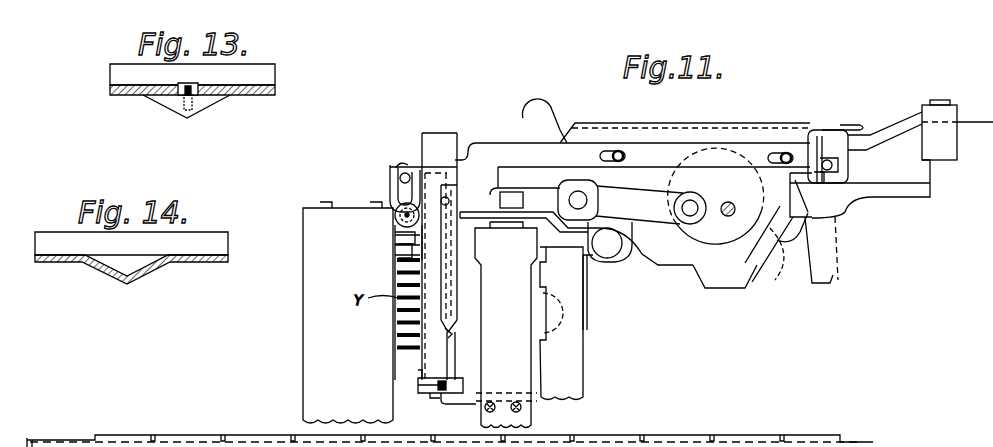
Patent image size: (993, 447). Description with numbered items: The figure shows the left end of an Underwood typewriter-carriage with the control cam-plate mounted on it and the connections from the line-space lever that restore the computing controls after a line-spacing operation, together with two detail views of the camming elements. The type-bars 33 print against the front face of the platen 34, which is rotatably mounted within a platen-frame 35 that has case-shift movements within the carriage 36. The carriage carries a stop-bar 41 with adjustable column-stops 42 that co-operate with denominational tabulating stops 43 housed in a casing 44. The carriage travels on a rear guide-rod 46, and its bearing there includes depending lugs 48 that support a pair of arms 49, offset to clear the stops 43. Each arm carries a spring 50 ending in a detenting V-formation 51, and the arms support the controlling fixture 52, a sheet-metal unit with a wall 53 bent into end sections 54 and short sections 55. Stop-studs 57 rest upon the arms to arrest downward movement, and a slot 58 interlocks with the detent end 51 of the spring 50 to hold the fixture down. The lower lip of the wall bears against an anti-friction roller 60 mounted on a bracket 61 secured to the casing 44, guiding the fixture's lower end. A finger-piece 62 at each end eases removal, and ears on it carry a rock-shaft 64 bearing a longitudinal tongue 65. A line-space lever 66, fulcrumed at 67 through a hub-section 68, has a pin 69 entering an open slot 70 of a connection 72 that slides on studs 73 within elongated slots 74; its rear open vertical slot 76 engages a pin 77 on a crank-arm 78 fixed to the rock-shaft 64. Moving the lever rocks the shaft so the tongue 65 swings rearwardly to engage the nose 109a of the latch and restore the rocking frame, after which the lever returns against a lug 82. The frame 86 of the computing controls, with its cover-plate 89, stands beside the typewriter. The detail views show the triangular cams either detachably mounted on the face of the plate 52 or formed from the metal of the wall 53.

In FIG. 11, the type-bar 33 is at (838, 240).
In FIG. 11, the platen 34 is at (772, 250).
In FIG. 11, the platen-frame 35 is at (752, 283).
In FIG. 11, the carriage 36 is at (905, 198).
In FIG. 11, the stop-bar 41 is at (517, 200).
In FIG. 11, the column-stop 42 is at (515, 191).
In FIG. 11, the denominational tabulating stop 43 is at (494, 232).
In FIG. 11, the casing 44 is at (506, 328).
In FIG. 11, the rear guide-rod 46 is at (607, 258).
In FIG. 11, the lug 48 is at (623, 259).
In FIG. 11, the arm 49 is at (565, 247).
In FIG. 11, the spring 50 is at (453, 289).
In FIG. 11, the detenting V-formation 51 is at (454, 333).
In FIG. 13, the controlling fixture 52 is at (192, 91).
In FIG. 14, the controlling fixture 52 is at (131, 258).
In FIG. 11, the controlling fixture 52 is at (469, 307).
In FIG. 11, the wall 53 is at (420, 372).
In FIG. 11, the end section 54 is at (440, 361).
In FIG. 11, the short section 55 is at (866, 446).
In FIG. 11, the stop-stud 57 is at (450, 200).
In FIG. 11, the slot 58 is at (456, 338).
In FIG. 11, the anti-friction roller 60 is at (441, 396).
In FIG. 11, the bracket 61 is at (480, 402).
In FIG. 11, the finger-piece 62 is at (445, 133).
In FIG. 11, the rock-shaft 64 is at (397, 222).
In FIG. 11, the longitudinal tongue 65 is at (398, 244).
In FIG. 11, the line-space lever 66 is at (957, 112).
In FIG. 11, the fulcrum 67 is at (839, 130).
In FIG. 11, the hub-section 68 is at (822, 134).
In FIG. 11, the pin 69 is at (833, 164).
In FIG. 11, the open slot 70 is at (826, 182).
In FIG. 11, the connection 72 is at (632, 165).
In FIG. 11, the stud 73 is at (622, 152).
In FIG. 11, the elongated slot 74 is at (600, 156).
In FIG. 11, the open vertical slot 76 is at (406, 172).
In FIG. 11, the pin 77 is at (393, 180).
In FIG. 11, the crank-arm 78 is at (400, 166).
In FIG. 11, the lug 82 is at (957, 130).
In FIG. 11, the frame 86 is at (348, 315).
In FIG. 11, the cover-plate 89 is at (352, 203).
In FIG. 11, the nose 109a is at (395, 237).